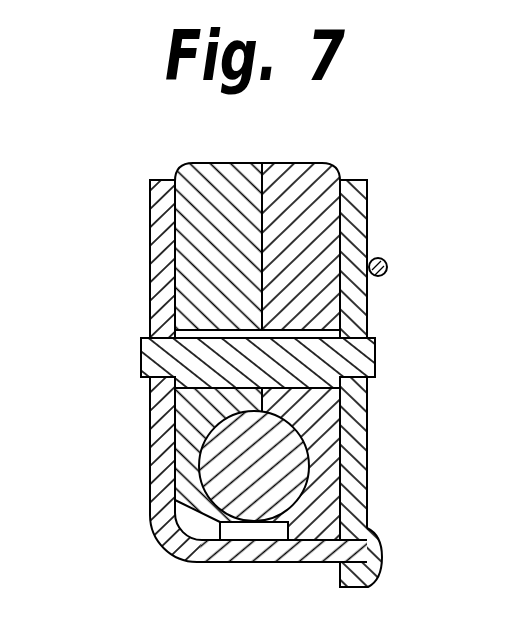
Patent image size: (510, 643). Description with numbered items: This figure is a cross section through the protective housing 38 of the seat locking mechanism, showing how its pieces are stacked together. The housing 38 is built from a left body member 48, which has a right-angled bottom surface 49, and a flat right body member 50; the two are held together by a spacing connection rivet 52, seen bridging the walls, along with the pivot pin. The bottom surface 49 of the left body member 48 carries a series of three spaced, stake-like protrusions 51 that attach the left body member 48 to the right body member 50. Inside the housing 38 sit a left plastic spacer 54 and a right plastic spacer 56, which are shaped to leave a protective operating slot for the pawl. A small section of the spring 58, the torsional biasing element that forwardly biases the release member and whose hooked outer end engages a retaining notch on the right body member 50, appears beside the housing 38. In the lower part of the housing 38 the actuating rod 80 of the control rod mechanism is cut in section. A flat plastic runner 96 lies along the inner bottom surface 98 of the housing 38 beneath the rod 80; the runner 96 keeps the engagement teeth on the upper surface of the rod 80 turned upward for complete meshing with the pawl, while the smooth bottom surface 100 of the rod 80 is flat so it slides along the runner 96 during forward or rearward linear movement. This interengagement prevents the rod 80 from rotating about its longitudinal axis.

The protective housing 38 is at (128, 462).
The left body member 48 is at (150, 257).
The right-angled bottom surface 49 is at (247, 541).
The right body member 50 is at (367, 425).
The stake-like protrusions 51 is at (382, 545).
The spacing connection rivet 52 is at (375, 352).
The left plastic spacer 54 is at (192, 168).
The right plastic spacer 56 is at (302, 168).
The spring 58 is at (388, 263).
The actuating rod 80 is at (309, 470).
The flat plastic runner 96 is at (285, 532).
The inner bottom surface 98 is at (235, 541).
The smooth bottom surface 100 is at (268, 541).